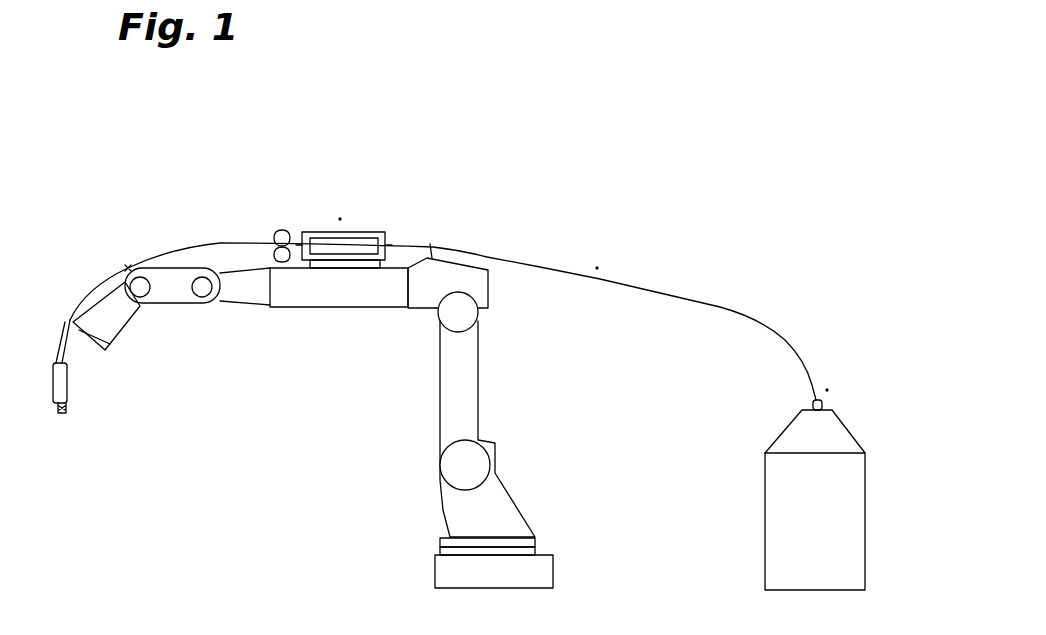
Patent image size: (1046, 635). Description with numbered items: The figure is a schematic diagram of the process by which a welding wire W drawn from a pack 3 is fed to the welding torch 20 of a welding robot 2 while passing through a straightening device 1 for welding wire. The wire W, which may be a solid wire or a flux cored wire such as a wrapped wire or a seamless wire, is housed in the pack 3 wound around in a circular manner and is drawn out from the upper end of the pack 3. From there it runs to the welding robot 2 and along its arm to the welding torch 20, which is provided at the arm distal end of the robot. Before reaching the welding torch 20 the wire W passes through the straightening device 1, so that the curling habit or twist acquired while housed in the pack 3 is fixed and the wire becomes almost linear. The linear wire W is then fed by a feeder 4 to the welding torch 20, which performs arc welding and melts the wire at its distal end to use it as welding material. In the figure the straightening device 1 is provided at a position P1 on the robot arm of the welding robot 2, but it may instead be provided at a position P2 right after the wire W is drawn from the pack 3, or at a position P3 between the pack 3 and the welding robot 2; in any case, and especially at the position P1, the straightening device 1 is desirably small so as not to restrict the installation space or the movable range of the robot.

The straightening device 1 is at (375, 232).
The welding robot 2 is at (342, 382).
The pack 3 is at (765, 490).
The feeder 4 is at (278, 230).
The welding torch 20 is at (67, 377).
The welding wire W is at (487, 258).
The position on robot arm P1 is at (340, 218).
The position right after pack P2 is at (827, 388).
The position between pack and robot P3 is at (597, 267).